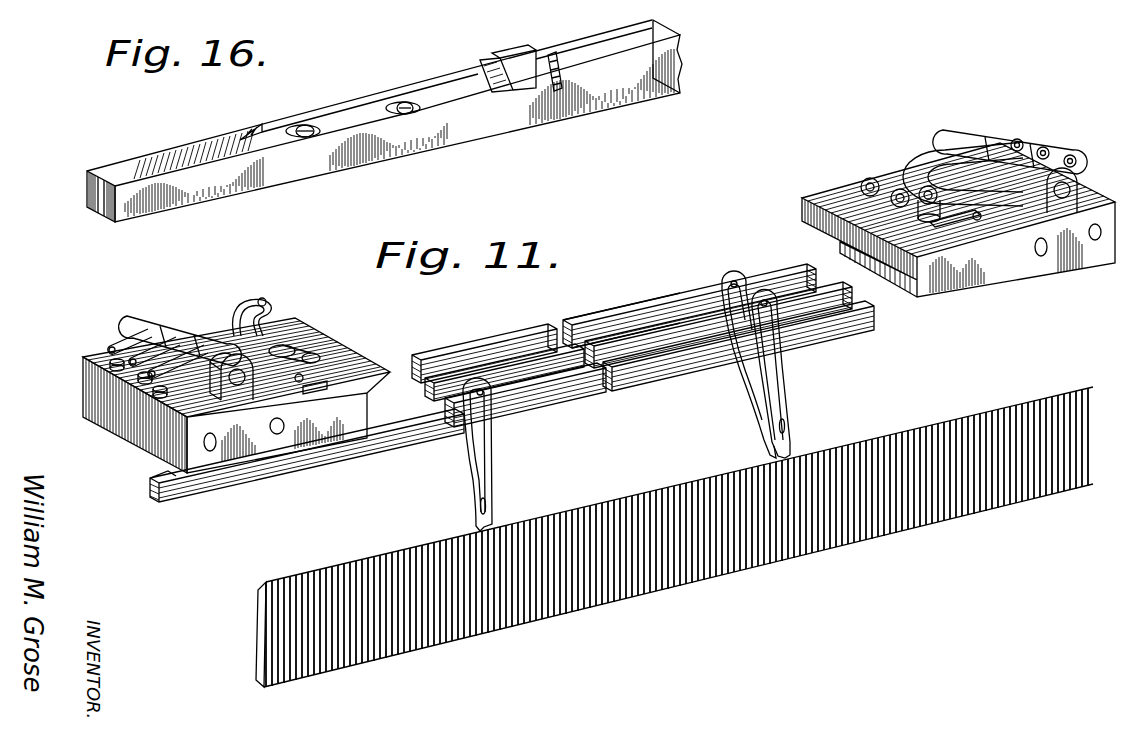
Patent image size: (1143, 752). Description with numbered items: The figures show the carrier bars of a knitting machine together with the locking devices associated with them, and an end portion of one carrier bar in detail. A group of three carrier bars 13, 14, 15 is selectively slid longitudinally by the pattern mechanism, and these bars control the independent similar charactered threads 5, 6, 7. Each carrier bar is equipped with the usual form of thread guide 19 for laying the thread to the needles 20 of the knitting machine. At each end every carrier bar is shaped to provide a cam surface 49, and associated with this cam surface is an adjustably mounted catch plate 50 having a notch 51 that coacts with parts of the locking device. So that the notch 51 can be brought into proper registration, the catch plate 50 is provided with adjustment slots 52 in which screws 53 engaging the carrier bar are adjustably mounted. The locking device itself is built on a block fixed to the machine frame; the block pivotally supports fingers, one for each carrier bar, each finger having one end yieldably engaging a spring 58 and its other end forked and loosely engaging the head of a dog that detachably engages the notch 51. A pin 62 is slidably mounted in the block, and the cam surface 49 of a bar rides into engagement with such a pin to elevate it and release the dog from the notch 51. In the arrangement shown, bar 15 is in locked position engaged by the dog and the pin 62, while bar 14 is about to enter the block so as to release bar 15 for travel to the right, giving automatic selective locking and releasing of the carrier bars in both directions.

In FIG. 11, the thread 5 is at (658, 258).
In FIG. 11, the thread 6 is at (481, 385).
In FIG. 11, the thread 7 is at (738, 270).
In FIG. 11, the carrier bar 13 is at (428, 350).
In FIG. 11, the carrier bar 14 is at (562, 322).
In FIG. 16, the carrier bar 15 is at (681, 70).
In FIG. 11, the carrier bar 15 is at (547, 405).
In FIG. 11, the thread guide 19 is at (490, 506).
In FIG. 11, the needles 20 is at (641, 494).
In FIG. 16, the cam surface 49 is at (188, 145).
In FIG. 11, the cam surface 49 is at (168, 480).
In FIG. 16, the catch plate 50 is at (375, 102).
In FIG. 16, the notch 51 is at (495, 58).
In FIG. 16, the adjustment slots 52 is at (400, 114).
In FIG. 16, the screws 53 is at (406, 112).
In FIG. 11, the spring 58 is at (133, 388).
In FIG. 11, the pin 62 is at (267, 365).